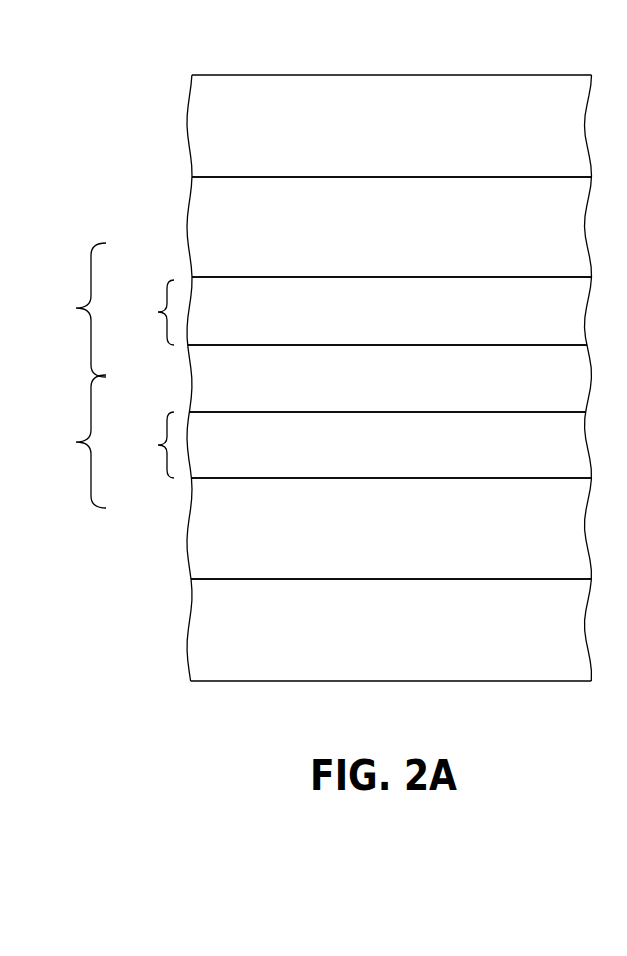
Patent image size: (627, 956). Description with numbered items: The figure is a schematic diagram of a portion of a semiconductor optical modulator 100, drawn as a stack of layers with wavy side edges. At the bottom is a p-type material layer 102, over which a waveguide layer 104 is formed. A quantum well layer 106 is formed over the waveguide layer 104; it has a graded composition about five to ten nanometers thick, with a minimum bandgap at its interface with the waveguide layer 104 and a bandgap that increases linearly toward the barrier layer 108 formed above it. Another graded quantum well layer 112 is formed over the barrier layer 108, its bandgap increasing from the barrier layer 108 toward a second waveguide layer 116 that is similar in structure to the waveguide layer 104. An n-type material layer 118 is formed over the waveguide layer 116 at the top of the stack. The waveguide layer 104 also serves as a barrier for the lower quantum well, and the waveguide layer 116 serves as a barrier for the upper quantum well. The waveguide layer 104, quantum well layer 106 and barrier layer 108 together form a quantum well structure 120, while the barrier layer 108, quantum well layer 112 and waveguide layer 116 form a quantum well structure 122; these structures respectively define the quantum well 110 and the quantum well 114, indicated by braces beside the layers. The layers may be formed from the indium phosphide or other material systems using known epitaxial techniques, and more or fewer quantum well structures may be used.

The semiconductor optical modulator 100 is at (147, 56).
The p-type material layer 102 is at (248, 666).
The waveguide layer 104 is at (238, 563).
The quantum well layer 106 is at (240, 465).
The barrier layer 108 is at (240, 401).
The quantum well 110 is at (145, 445).
The quantum well layer 112 is at (240, 333).
The quantum well 114 is at (142, 312).
The waveguide layer 116 is at (238, 256).
The n-type material layer 118 is at (240, 158).
The quantum well structure 120 is at (71, 441).
The quantum well structure 122 is at (71, 310).